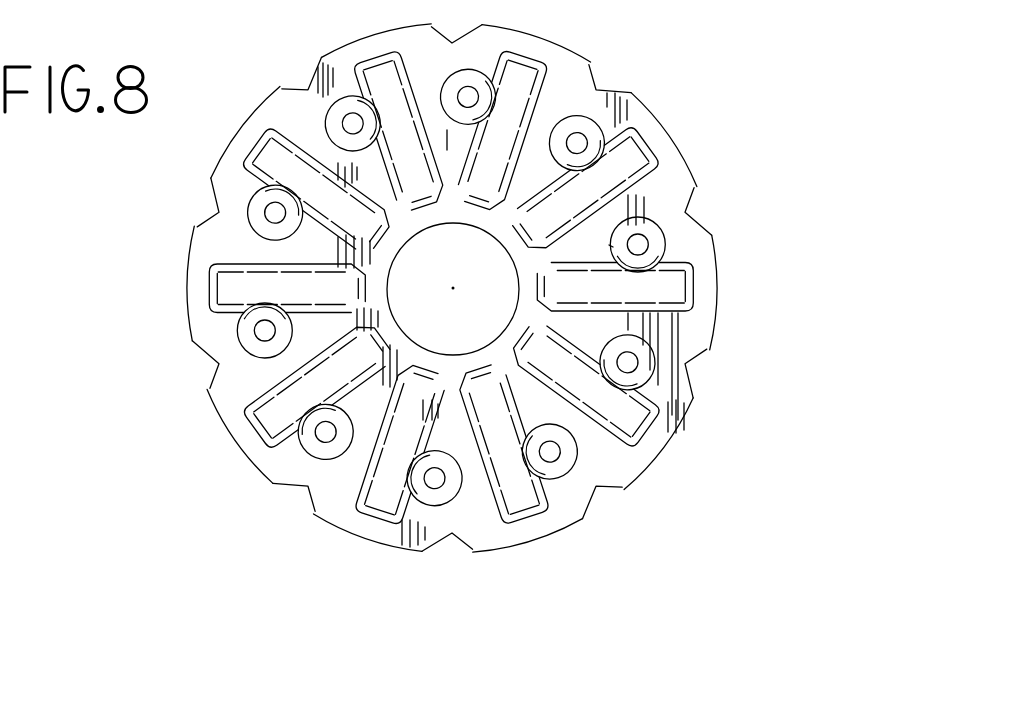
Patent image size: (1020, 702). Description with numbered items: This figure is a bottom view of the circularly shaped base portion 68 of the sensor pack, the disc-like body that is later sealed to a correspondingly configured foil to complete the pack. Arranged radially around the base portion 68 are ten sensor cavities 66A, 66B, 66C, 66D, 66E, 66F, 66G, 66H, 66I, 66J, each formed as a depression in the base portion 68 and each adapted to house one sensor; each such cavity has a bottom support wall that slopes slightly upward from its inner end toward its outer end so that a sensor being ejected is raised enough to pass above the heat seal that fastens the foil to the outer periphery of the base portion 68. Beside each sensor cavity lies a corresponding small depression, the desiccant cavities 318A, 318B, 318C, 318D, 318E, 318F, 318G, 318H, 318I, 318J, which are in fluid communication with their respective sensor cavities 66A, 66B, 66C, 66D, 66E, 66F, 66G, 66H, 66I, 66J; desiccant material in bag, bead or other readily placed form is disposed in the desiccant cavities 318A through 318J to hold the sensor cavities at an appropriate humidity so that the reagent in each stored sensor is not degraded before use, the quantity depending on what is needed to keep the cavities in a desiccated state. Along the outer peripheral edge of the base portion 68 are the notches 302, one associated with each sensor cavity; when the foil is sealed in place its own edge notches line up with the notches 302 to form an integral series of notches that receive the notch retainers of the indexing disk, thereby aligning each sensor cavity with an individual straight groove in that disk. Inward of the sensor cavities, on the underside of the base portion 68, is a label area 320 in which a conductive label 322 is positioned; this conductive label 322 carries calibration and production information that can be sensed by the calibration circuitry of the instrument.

The base portion 68 is at (177, 291).
The notches 302 is at (450, 42).
The conductive label 322 is at (479, 283).
The label area 320 is at (594, 247).
The sensor cavity 66A is at (530, 88).
The sensor cavity 66B is at (643, 165).
The sensor cavity 66C is at (680, 288).
The sensor cavity 66D is at (655, 418).
The sensor cavity 66E is at (550, 497).
The sensor cavity 66F is at (375, 503).
The sensor cavity 66G is at (265, 413).
The sensor cavity 66H is at (220, 288).
The sensor cavity 66I is at (267, 156).
The sensor cavity 66J is at (375, 62).
The desiccant cavity 318A is at (478, 72).
The desiccant cavity 318B is at (594, 142).
The desiccant cavity 318C is at (656, 246).
The desiccant cavity 318D is at (635, 362).
The desiccant cavity 318E is at (567, 450).
The desiccant cavity 318F is at (443, 485).
The desiccant cavity 318G is at (312, 438).
The desiccant cavity 318H is at (258, 331).
The desiccant cavity 318I is at (268, 214).
The desiccant cavity 318J is at (351, 123).